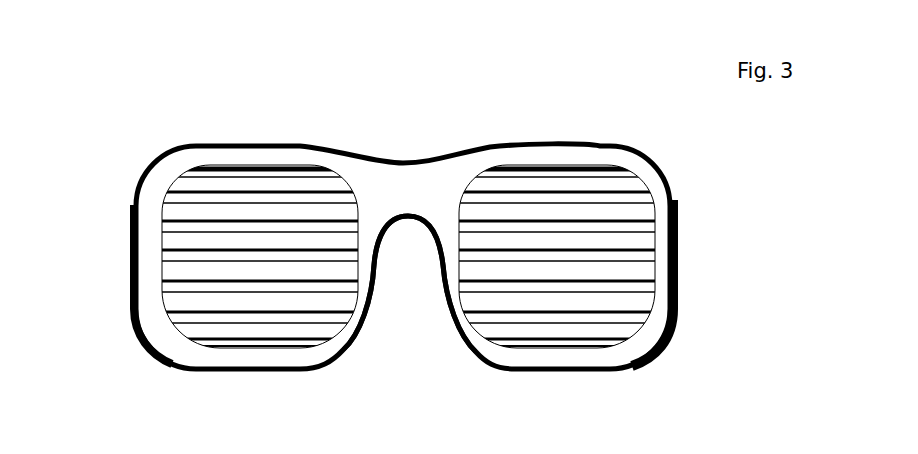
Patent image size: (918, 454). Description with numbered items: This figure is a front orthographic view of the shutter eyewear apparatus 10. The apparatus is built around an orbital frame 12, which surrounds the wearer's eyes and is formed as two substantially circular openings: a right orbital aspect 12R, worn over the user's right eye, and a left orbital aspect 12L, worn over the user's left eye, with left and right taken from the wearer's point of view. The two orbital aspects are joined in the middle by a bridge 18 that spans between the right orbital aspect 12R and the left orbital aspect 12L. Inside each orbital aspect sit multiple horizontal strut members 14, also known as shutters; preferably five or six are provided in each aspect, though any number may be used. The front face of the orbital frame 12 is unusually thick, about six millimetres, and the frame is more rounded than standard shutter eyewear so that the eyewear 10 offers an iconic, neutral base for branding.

The shutter eyewear apparatus 10 is at (86, 82).
The orbital frame 12 is at (607, 143).
The right orbital aspect 12R is at (227, 128).
The left orbital aspect 12L is at (562, 120).
The strut members 14 is at (345, 212).
The bridge 18 is at (420, 180).